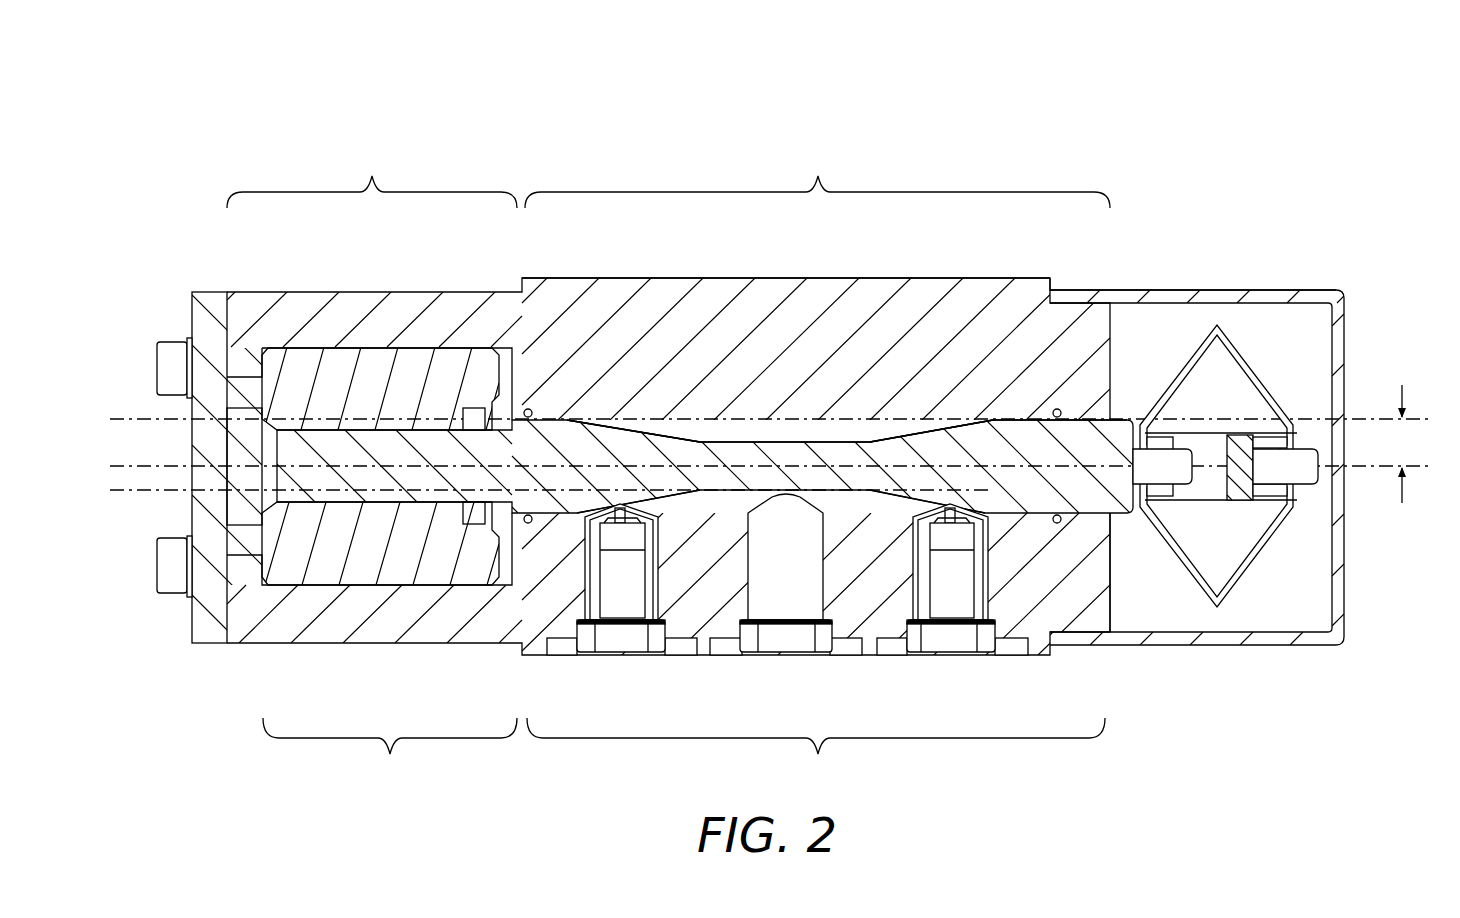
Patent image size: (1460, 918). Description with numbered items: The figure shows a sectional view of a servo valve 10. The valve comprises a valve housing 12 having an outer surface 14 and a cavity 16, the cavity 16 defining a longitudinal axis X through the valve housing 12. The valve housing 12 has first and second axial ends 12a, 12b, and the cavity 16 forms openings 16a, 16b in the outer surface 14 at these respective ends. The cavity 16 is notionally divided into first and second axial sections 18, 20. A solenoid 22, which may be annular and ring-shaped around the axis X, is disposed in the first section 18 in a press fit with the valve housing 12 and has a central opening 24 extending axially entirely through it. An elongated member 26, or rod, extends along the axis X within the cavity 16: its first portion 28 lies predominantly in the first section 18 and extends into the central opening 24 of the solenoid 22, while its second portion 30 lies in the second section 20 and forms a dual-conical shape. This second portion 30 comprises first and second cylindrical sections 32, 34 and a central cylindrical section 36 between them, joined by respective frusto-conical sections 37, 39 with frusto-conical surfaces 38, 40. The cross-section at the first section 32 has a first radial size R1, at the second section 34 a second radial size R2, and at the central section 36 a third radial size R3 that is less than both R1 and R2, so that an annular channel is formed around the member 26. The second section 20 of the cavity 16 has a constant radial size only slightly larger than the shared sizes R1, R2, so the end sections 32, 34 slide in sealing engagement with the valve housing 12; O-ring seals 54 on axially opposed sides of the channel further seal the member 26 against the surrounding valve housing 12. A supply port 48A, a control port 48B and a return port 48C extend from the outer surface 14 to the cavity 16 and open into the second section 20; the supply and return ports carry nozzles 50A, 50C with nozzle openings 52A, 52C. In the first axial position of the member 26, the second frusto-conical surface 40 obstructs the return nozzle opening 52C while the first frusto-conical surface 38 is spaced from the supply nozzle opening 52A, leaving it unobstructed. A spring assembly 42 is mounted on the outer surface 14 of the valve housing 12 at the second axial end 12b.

The servo valve 10 is at (1360, 206).
The valve housing 12 is at (553, 337).
The first axial end 12a is at (228, 621).
The second axial end 12b is at (1112, 598).
The outer surface 14 is at (783, 278).
The cavity 16 is at (893, 403).
The opening 16a is at (233, 360).
The opening 16b is at (1113, 417).
The first axial section 18 is at (372, 178).
The second axial section 20 is at (817, 178).
The solenoid 22 is at (323, 565).
The central opening 24 is at (392, 505).
The elongated member 26 is at (699, 453).
The first portion 28 is at (390, 750).
The second portion 30 is at (816, 750).
The first cylindrical section 32 is at (600, 442).
The second cylindrical section 34 is at (1017, 433).
The central cylindrical section 36 is at (840, 453).
The first frusto-conical section 37 is at (588, 480).
The first frusto-conical surface 38 is at (638, 433).
The second frusto-conical section 39 is at (977, 482).
The second frusto-conical surface 40 is at (943, 427).
The spring assembly 42 is at (1354, 601).
The supply port 48A is at (620, 602).
The control port 48B is at (787, 602).
The return port 48C is at (952, 590).
The supply port nozzle 50A is at (580, 580).
The return port nozzle 50C is at (982, 570).
The supply port nozzle opening 52A is at (660, 535).
The return port nozzle opening 52C is at (923, 530).
The O-ring seals 54 is at (528, 409).
The first radial size R1 is at (117, 500).
The second radial size R2 is at (1420, 440).
The third radial size R3 is at (155, 523).
The longitudinal axis X is at (768, 466).